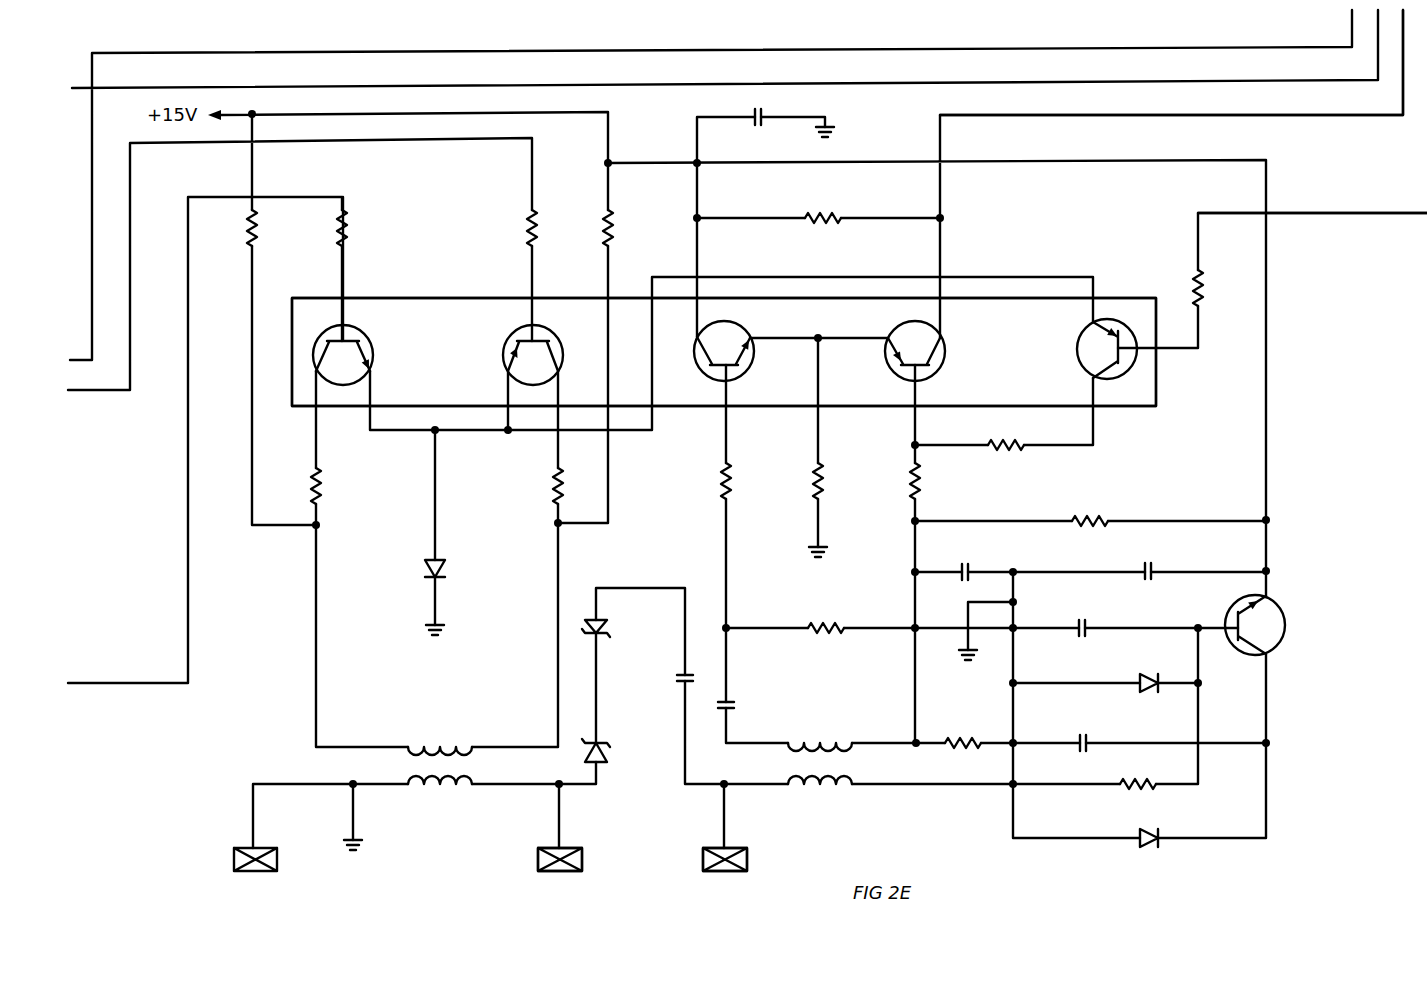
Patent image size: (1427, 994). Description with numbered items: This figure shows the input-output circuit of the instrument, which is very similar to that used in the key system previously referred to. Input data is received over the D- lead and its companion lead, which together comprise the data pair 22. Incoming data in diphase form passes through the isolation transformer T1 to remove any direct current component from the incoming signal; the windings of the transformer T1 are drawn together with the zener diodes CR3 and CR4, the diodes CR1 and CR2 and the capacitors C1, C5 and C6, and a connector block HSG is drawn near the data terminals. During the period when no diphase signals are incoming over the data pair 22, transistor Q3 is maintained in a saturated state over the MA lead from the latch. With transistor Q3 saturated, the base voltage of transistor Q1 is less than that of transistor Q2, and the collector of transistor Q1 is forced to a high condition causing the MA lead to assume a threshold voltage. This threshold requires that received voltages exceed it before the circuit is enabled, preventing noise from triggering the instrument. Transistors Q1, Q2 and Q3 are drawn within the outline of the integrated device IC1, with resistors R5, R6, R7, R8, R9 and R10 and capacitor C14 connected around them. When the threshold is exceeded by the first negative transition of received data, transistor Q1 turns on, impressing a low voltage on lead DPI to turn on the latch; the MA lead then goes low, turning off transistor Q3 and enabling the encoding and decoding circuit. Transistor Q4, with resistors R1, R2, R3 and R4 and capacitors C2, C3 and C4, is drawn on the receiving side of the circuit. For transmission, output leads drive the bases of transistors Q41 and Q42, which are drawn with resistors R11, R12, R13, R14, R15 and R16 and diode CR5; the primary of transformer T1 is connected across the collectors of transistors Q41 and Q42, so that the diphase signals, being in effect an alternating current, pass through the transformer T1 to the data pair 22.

The resistor R1 is at (1138, 772).
The resistor R2 is at (963, 733).
The resistor R3 is at (826, 616).
The resistor R4 is at (1090, 509).
The resistor R5 is at (1006, 434).
The resistor R6 is at (931, 481).
The resistor R7 is at (835, 481).
The resistor R8 is at (742, 481).
The resistor R9 is at (1214, 288).
The resistor R10 is at (823, 207).
The resistor R11 is at (629, 228).
The resistor R12 is at (512, 228).
The resistor R13 is at (363, 228).
The resistor R14 is at (273, 228).
The resistor R15 is at (536, 486).
The resistor R16 is at (337, 486).
The capacitor C1 is at (1085, 734).
The capacitor C2 is at (1082, 616).
The capacitor C3 is at (1149, 559).
The capacitor C4 is at (967, 561).
The capacitor C5 is at (742, 707).
The capacitor C6 is at (697, 668).
The capacitor C14 is at (760, 130).
The diode CR1 is at (1146, 672).
The diode CR2 is at (1146, 827).
The zener diode CR3 is at (616, 629).
The zener diode CR4 is at (616, 753).
The diode CR5 is at (457, 571).
The transistor Q1 is at (895, 325).
The transistor Q2 is at (750, 326).
The transistor Q3 is at (1084, 368).
The transistor Q4 is at (1275, 625).
The transistor Q41 is at (503, 357).
The transistor Q42 is at (374, 352).
The integrated circuit IC1 is at (724, 352).
The transformer T1 is at (630, 763).
The housing connector HSG is at (254, 872).
The D− lead D- is at (560, 870).
The data pair 22 is at (765, 888).
The DPI lead DPI is at (1341, 116).
The MA lead MA is at (1376, 214).